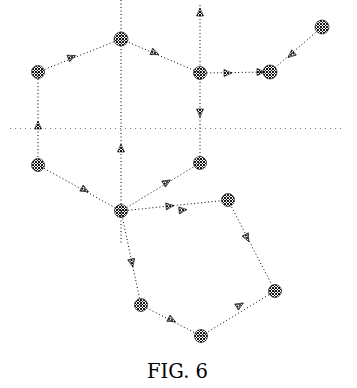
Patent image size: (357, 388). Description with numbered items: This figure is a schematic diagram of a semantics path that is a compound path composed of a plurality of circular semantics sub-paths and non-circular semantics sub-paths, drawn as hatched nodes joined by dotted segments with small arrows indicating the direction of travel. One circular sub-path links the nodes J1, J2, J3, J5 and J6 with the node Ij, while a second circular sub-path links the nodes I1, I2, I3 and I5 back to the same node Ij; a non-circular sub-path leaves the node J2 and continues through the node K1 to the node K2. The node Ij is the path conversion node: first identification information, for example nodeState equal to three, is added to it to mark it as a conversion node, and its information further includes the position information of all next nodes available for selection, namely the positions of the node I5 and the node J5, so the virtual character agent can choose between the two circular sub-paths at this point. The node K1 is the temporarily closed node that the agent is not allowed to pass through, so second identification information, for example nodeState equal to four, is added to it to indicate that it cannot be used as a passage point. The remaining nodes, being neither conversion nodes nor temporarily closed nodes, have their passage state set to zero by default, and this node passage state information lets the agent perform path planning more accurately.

The node J1 is at (123, 32).
The node J2 is at (194, 68).
The node J3 is at (194, 159).
The node J5 is at (36, 173).
The node J6 is at (32, 72).
The node K1 is at (275, 78).
The node K2 is at (330, 31).
The node I1 is at (282, 292).
The node I2 is at (208, 338).
The node I3 is at (133, 308).
The node I5 is at (238, 200).
The path conversion node Ij is at (112, 212).